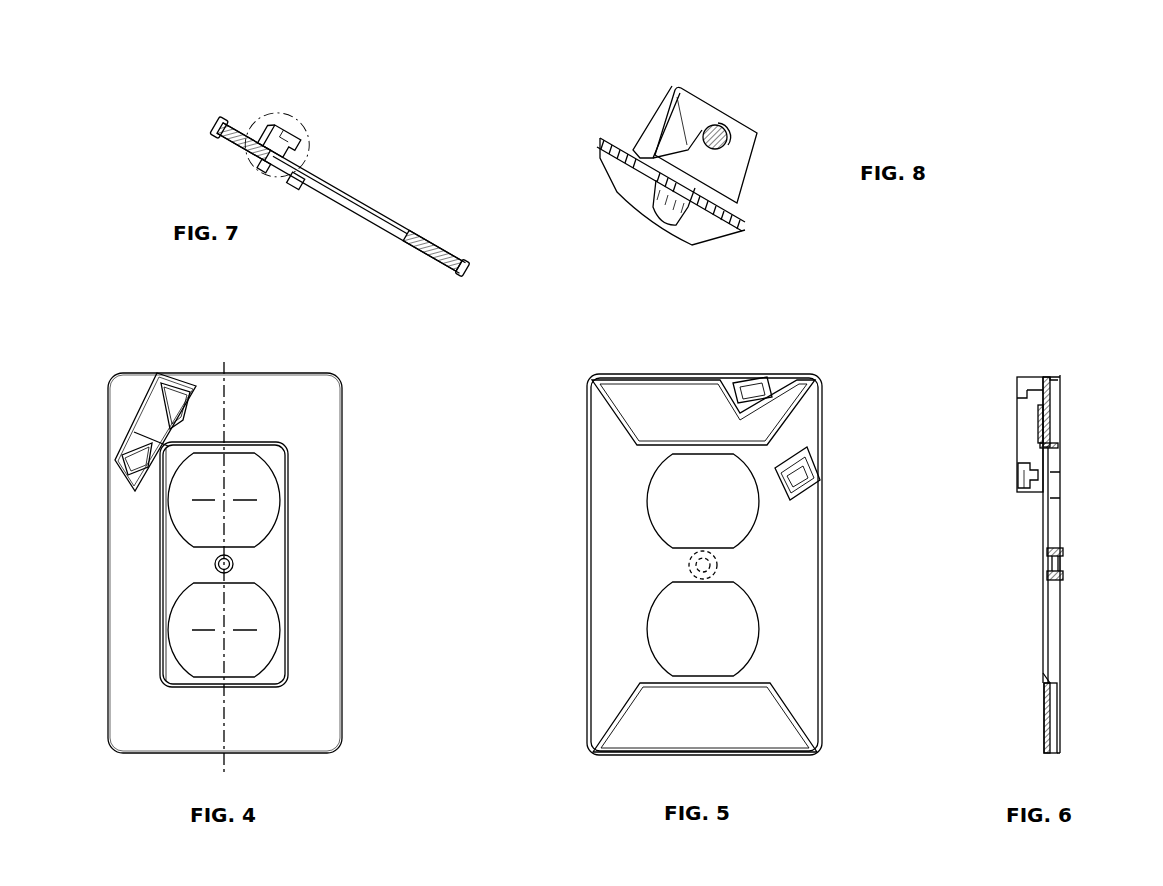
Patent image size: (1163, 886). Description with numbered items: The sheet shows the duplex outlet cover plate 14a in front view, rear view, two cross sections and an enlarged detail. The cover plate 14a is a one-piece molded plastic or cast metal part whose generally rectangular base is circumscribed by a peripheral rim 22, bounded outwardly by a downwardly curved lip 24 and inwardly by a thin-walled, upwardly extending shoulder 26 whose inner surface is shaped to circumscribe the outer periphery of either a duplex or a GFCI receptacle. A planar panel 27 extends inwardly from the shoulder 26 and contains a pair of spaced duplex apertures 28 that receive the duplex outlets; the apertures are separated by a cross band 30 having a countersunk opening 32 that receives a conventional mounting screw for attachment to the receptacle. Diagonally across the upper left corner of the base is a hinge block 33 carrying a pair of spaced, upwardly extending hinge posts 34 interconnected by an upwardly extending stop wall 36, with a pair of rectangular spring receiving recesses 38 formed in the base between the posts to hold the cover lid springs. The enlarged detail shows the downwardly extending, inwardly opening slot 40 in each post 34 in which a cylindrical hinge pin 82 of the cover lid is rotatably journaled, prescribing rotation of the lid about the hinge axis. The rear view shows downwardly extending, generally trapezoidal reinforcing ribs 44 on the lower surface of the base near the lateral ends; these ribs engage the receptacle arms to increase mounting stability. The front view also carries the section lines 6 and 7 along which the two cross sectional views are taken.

In FIG. 4, the cover plate 14a is at (124, 758).
In FIG. 5, the cover plate 14a is at (580, 559).
In FIG. 4, the peripheral rim 22 is at (327, 755).
In FIG. 6, the peripheral rim 22 is at (1047, 375).
In FIG. 6, the downwardly curved lip 24 is at (1053, 375).
In FIG. 7, the downwardly curved lip 24 is at (462, 273).
In FIG. 4, the shoulder 26 is at (288, 473).
In FIG. 6, the shoulder 26 is at (1043, 683).
In FIG. 7, the shoulder 26 is at (410, 233).
In FIG. 4, the planar panel 27 is at (177, 555).
In FIG. 7, the planar panel 27 is at (315, 175).
In FIG. 4, the duplex apertures 28 is at (268, 633).
In FIG. 5, the duplex apertures 28 is at (737, 517).
In FIG. 5, the cross band 30 is at (677, 573).
In FIG. 6, the cross band 30 is at (1060, 578).
In FIG. 4, the countersunk opening 32 is at (217, 566).
In FIG. 5, the countersunk opening 32 is at (710, 565).
In FIG. 6, the countersunk opening 32 is at (1050, 563).
In FIG. 4, the hinge block 33 is at (134, 388).
In FIG. 6, the hinge block 33 is at (1010, 434).
In FIG. 4, the hinge posts 34 is at (183, 385).
In FIG. 6, the hinge posts 34 is at (1017, 380).
In FIG. 7, the hinge posts 34 is at (282, 128).
In FIG. 8, the hinge posts 34 is at (697, 98).
In FIG. 4, the stop wall 36 is at (150, 405).
In FIG. 7, the stop wall 36 is at (265, 135).
In FIG. 8, the stop wall 36 is at (657, 130).
In FIG. 4, the spring receiving recesses 38 is at (175, 403).
In FIG. 8, the slot 40 is at (732, 137).
In FIG. 5, the reinforcing ribs 44 is at (620, 425).
In FIG. 8, the hinge pins 82 is at (725, 132).
In FIG. 4, the section line 6— 6 is at (224, 361).
In FIG. 4, the section line 7— 7 is at (97, 403).